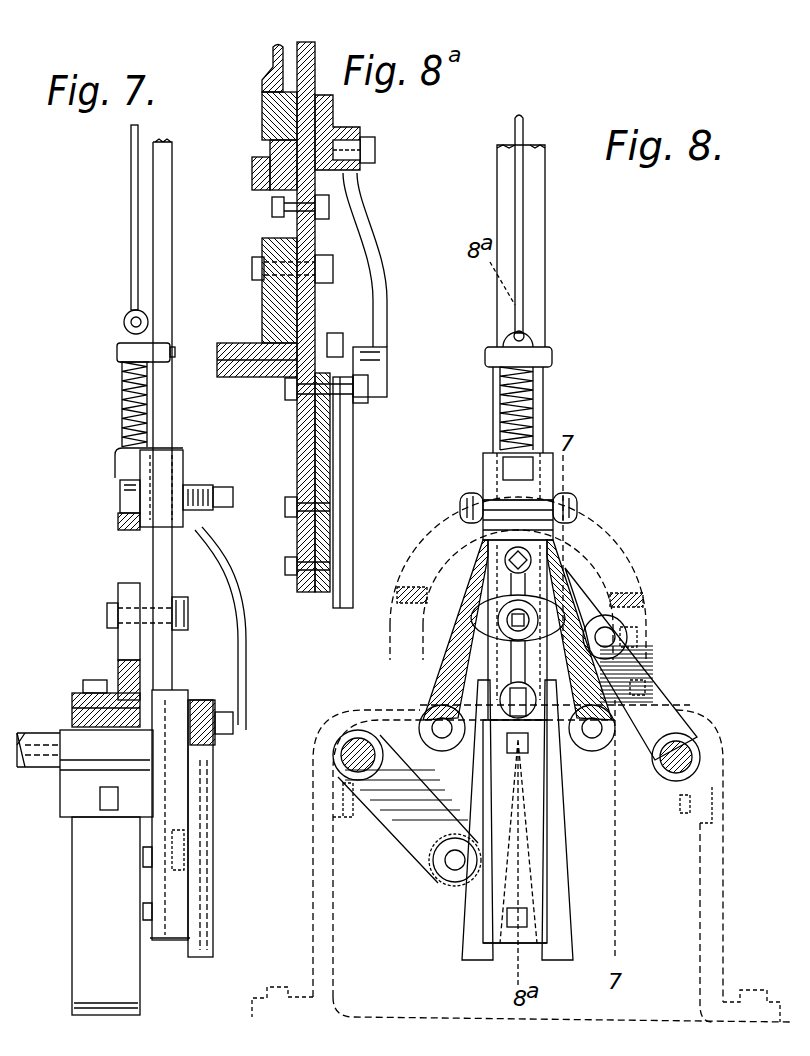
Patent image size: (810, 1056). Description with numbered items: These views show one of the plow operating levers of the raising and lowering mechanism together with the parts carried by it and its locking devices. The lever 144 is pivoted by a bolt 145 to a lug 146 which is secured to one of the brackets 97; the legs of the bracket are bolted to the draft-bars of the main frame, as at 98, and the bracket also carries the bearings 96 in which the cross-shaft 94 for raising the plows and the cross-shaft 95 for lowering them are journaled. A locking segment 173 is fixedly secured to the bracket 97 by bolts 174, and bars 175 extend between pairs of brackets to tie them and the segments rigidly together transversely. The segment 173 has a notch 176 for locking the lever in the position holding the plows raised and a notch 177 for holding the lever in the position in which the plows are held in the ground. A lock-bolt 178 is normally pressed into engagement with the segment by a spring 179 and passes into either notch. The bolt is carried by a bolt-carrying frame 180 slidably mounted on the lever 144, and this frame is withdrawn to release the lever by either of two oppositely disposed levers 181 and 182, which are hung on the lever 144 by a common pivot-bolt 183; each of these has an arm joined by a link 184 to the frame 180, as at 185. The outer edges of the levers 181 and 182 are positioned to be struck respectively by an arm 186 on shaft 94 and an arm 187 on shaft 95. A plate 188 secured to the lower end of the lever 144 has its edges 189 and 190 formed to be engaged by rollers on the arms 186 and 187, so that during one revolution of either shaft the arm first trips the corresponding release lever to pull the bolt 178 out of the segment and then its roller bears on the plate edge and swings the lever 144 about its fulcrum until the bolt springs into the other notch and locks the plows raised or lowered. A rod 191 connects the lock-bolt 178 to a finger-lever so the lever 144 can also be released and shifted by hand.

In FIG. 8, the cross-shaft 94 is at (700, 745).
In FIG. 7, the cross-shaft 95 is at (48, 735).
In FIG. 8, the cross-shaft 95 is at (350, 742).
In FIG. 7, the bearing 96 is at (62, 776).
In FIG. 8, the bearing 96 is at (695, 768).
In FIG. 7, the bracket 97 is at (82, 870).
In FIG. 8, the bracket 97 is at (333, 890).
In FIG. 8, the bolt 98 is at (284, 988).
In FIG. 7, the lever 144 is at (166, 252).
In FIG. 8A, the lever 144 is at (315, 52).
In FIG. 8, the lever 144 is at (545, 274).
In FIG. 7, the bolt 145 is at (107, 612).
In FIG. 8A, the bolt 145 is at (252, 268).
In FIG. 8, the bolt 145 is at (533, 612).
In FIG. 7, the lug 146 is at (118, 650).
In FIG. 8A, the lug 146 is at (262, 305).
In FIG. 7, the locking segment 173 is at (118, 522).
In FIG. 8A, the locking segment 173 is at (270, 152).
In FIG. 8, the locking segment 173 is at (632, 548).
In FIG. 8, the bolt 174 is at (655, 677).
In FIG. 8, the bar 175 is at (397, 592).
In FIG. 8, the notch 176 is at (467, 500).
In FIG. 7, the notch 177 is at (118, 503).
In FIG. 8, the notch 177 is at (580, 500).
In FIG. 7, the lock-bolt 178 is at (122, 410).
In FIG. 8, the lock-bolt 178 is at (530, 385).
In FIG. 7, the spring 179 is at (122, 388).
In FIG. 8, the spring 179 is at (533, 407).
In FIG. 7, the bolt-carrying frame 180 is at (175, 462).
In FIG. 8A, the bolt-carrying frame 180 is at (338, 110).
In FIG. 8, the bolt-carrying frame 180 is at (553, 467).
In FIG. 7, the lever 181 is at (214, 755).
In FIG. 8A, the lever 181 is at (353, 492).
In FIG. 8, the lever 181 is at (578, 750).
In FIG. 7, the lever 182 is at (211, 772).
In FIG. 8A, the lever 182 is at (360, 400).
In FIG. 8, the lever 182 is at (452, 750).
In FIG. 7, the pivot-bolt 183 is at (232, 725).
In FIG. 8A, the pivot-bolt 183 is at (285, 390).
In FIG. 8, the pivot-bolt 183 is at (528, 753).
In FIG. 7, the link 184 is at (243, 573).
In FIG. 8A, the link 184 is at (355, 235).
In FIG. 8, the link 184 is at (467, 583).
In FIG. 7, the connection 185 is at (213, 493).
In FIG. 8A, the connection 185 is at (367, 147).
In FIG. 8, the arm 186 is at (640, 700).
In FIG. 7, the arm 187 is at (208, 818).
In FIG. 8, the arm 187 is at (400, 777).
In FIG. 7, the plate 188 is at (178, 938).
In FIG. 8A, the plate 188 is at (315, 595).
In FIG. 8, the plate 188 is at (510, 897).
In FIG. 8, the edge 189 is at (430, 865).
In FIG. 8, the edge 190 is at (560, 820).
In FIG. 7, the rod 191 is at (131, 221).
In FIG. 8A, the rod 191 is at (273, 60).
In FIG. 8, the rod 191 is at (523, 222).